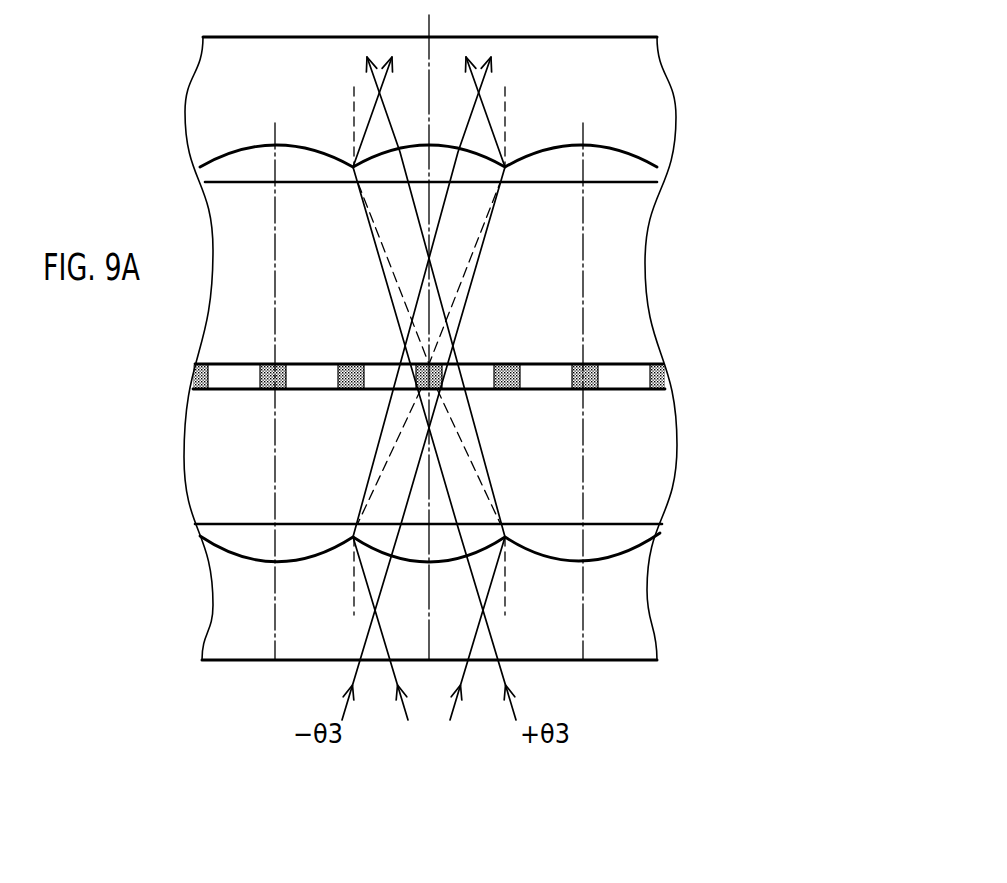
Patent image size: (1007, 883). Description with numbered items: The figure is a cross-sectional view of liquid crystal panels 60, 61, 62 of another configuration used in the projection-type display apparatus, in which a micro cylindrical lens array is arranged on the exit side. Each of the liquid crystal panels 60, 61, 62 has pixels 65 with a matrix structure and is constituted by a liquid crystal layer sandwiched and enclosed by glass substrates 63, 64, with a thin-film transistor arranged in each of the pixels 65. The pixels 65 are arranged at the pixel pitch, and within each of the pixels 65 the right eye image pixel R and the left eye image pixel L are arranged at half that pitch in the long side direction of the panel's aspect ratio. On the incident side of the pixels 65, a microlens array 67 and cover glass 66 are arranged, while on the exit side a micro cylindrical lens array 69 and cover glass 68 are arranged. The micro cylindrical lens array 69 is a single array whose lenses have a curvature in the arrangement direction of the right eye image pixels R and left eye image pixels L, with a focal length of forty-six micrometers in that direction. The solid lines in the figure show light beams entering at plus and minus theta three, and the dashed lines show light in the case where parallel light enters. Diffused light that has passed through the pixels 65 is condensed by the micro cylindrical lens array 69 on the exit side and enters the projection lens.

The liquid crystal panel 60 is at (527, 348).
The liquid crystal panel 61 is at (527, 348).
The liquid crystal panel 62 is at (740, 660).
The glass substrate 63 is at (648, 453).
The glass substrate 64 is at (637, 268).
The pixels 65 is at (630, 371).
The cover glass 66 is at (632, 603).
The microlens array 67 is at (638, 535).
The cover glass 68 is at (658, 95).
The micro cylindrical lens array 69 is at (632, 163).